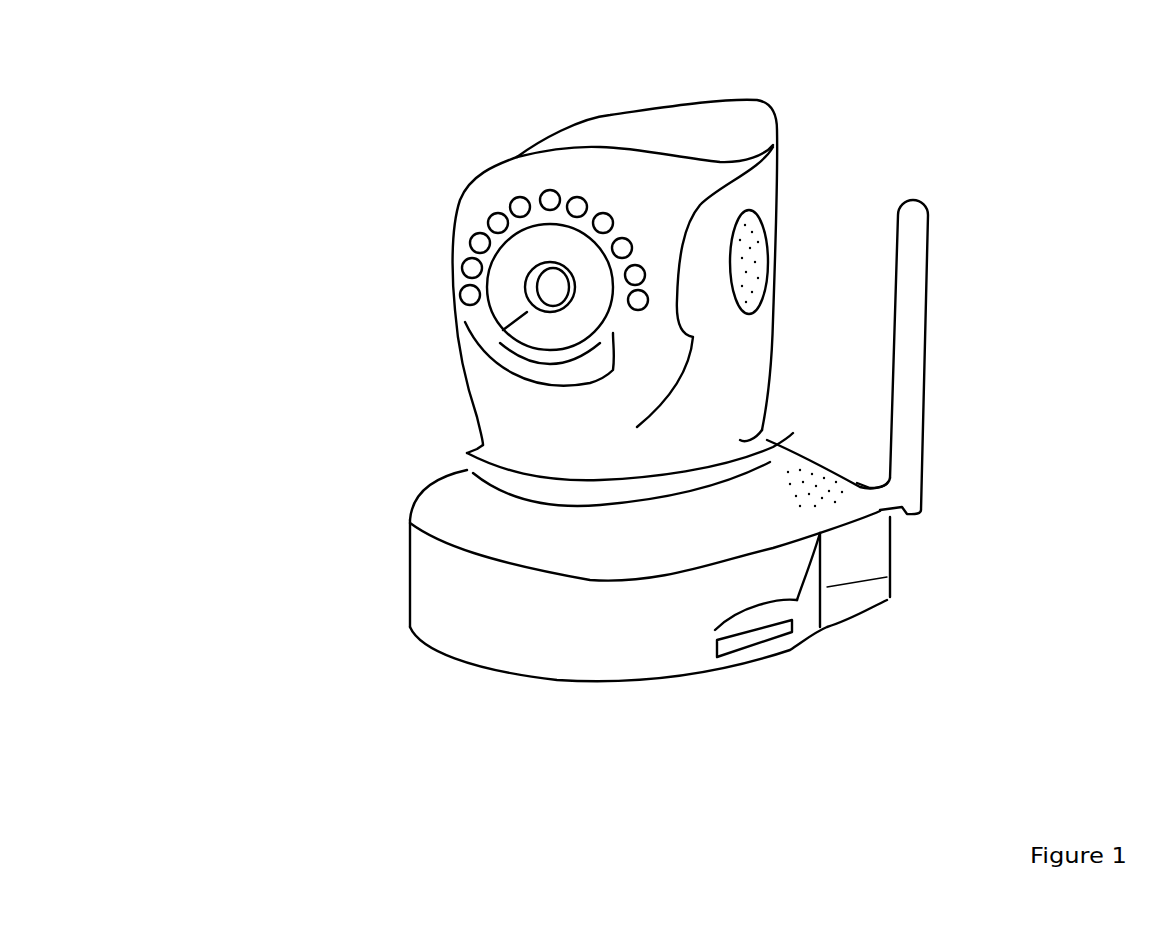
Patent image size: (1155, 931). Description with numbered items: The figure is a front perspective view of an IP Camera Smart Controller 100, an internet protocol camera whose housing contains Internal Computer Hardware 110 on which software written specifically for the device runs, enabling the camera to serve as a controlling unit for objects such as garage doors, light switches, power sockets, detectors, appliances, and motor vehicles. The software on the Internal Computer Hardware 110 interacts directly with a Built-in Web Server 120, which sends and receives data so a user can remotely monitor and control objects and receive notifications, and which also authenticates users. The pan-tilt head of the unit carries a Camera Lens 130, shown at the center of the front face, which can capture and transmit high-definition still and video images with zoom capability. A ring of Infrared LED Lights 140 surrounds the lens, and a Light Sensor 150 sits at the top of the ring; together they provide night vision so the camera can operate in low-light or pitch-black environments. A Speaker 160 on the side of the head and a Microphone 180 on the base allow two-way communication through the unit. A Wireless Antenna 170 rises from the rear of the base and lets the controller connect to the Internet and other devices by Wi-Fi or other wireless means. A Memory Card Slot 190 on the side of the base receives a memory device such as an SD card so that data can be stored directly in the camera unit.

The IP Camera Smart Controller 100 is at (586, 393).
The Internal Computer Hardware 110 is at (487, 607).
The Built-in Web Server 120 is at (487, 507).
The Camera Lens 130 is at (528, 285).
The Infrared LED Lights 140 is at (468, 243).
The Light Sensor 150 is at (543, 187).
The Speaker 160 is at (768, 252).
The Wireless Antenna 170 is at (912, 193).
The Microphone 180 is at (843, 477).
The Memory Card Slot 190 is at (800, 618).